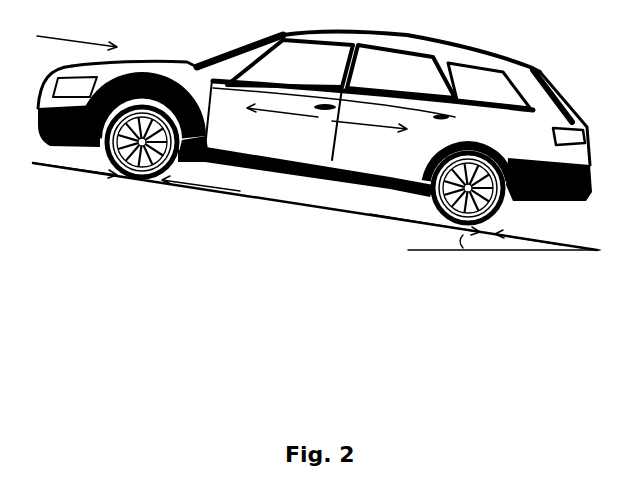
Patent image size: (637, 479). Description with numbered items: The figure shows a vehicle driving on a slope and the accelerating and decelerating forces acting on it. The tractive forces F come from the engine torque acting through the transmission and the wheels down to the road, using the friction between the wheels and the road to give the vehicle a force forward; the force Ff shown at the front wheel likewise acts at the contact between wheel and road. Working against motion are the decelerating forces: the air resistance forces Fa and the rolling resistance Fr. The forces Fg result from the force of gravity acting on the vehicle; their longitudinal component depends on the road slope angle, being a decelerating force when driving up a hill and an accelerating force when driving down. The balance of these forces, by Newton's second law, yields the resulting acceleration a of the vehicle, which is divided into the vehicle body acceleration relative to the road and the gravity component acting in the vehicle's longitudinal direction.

The air resistance forces Fa is at (77, 35).
The front wheel force Ff is at (74, 159).
The tractive forces F is at (367, 210).
The resulting acceleration a is at (275, 108).
The gravity forces Fg is at (379, 129).
The rolling resistance Fr is at (422, 214).